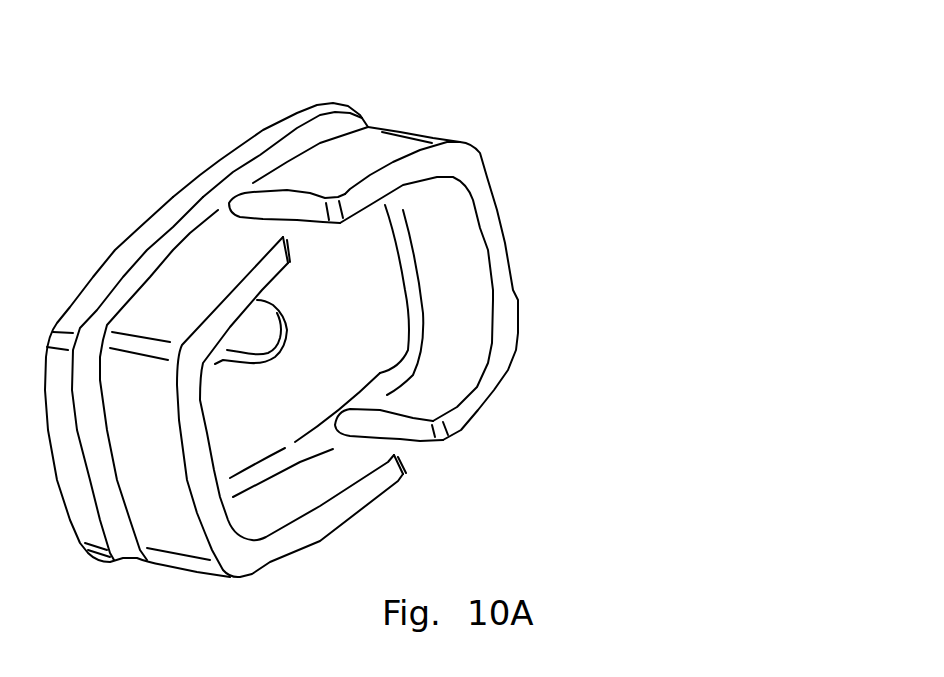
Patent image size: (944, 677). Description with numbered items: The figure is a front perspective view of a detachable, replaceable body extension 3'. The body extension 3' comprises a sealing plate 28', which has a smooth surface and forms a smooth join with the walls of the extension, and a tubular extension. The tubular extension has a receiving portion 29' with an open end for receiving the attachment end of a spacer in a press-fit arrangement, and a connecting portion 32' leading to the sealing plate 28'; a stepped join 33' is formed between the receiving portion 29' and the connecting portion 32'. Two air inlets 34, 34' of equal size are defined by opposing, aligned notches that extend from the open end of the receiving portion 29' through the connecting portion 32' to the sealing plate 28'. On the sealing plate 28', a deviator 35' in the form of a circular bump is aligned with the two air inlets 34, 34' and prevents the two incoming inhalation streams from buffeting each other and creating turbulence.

The detachable body extension 3' is at (339, 329).
The sealing plate 28' is at (466, 351).
The receiving portion 29' is at (429, 246).
The connecting portion 32' is at (270, 119).
The stepped join 33' is at (414, 75).
The air inlet 34 is at (244, 169).
The air inlet 34' is at (442, 476).
The deviator 35' is at (407, 332).